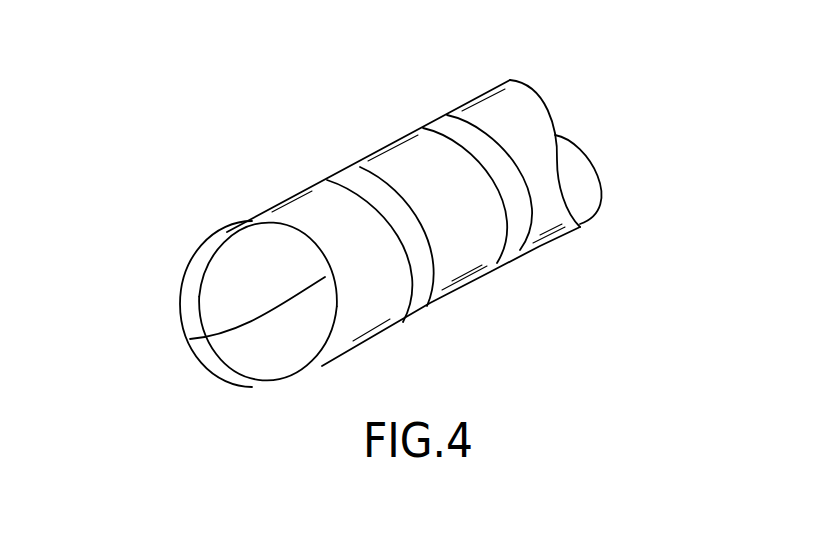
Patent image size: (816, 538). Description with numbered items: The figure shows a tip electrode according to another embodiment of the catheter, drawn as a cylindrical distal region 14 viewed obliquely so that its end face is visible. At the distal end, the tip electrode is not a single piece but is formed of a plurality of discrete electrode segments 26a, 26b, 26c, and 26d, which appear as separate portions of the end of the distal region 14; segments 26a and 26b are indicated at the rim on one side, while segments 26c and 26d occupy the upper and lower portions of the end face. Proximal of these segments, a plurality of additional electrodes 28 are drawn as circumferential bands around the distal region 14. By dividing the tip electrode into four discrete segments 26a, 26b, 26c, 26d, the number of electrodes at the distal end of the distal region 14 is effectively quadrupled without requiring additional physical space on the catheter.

The distal region 14 is at (556, 52).
The electrode segment 26a is at (187, 303).
The electrode segment 26b is at (203, 353).
The electrode segment 26c is at (232, 248).
The electrode segment 26d is at (273, 368).
The additional electrodes 28 is at (415, 308).